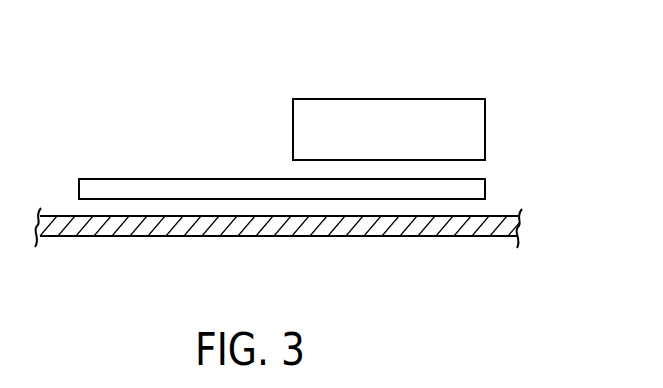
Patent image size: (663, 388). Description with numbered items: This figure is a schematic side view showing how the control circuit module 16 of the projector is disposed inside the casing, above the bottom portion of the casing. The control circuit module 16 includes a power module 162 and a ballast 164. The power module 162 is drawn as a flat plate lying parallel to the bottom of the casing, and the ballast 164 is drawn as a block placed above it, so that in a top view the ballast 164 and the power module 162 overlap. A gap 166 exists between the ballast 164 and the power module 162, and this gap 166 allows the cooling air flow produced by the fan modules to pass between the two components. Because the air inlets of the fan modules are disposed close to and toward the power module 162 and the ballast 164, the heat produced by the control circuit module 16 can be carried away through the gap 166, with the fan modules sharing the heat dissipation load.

The control circuit module 16 is at (390, 62).
The power module 162 is at (253, 187).
The ballast 164 is at (358, 113).
The gap 166 is at (483, 170).